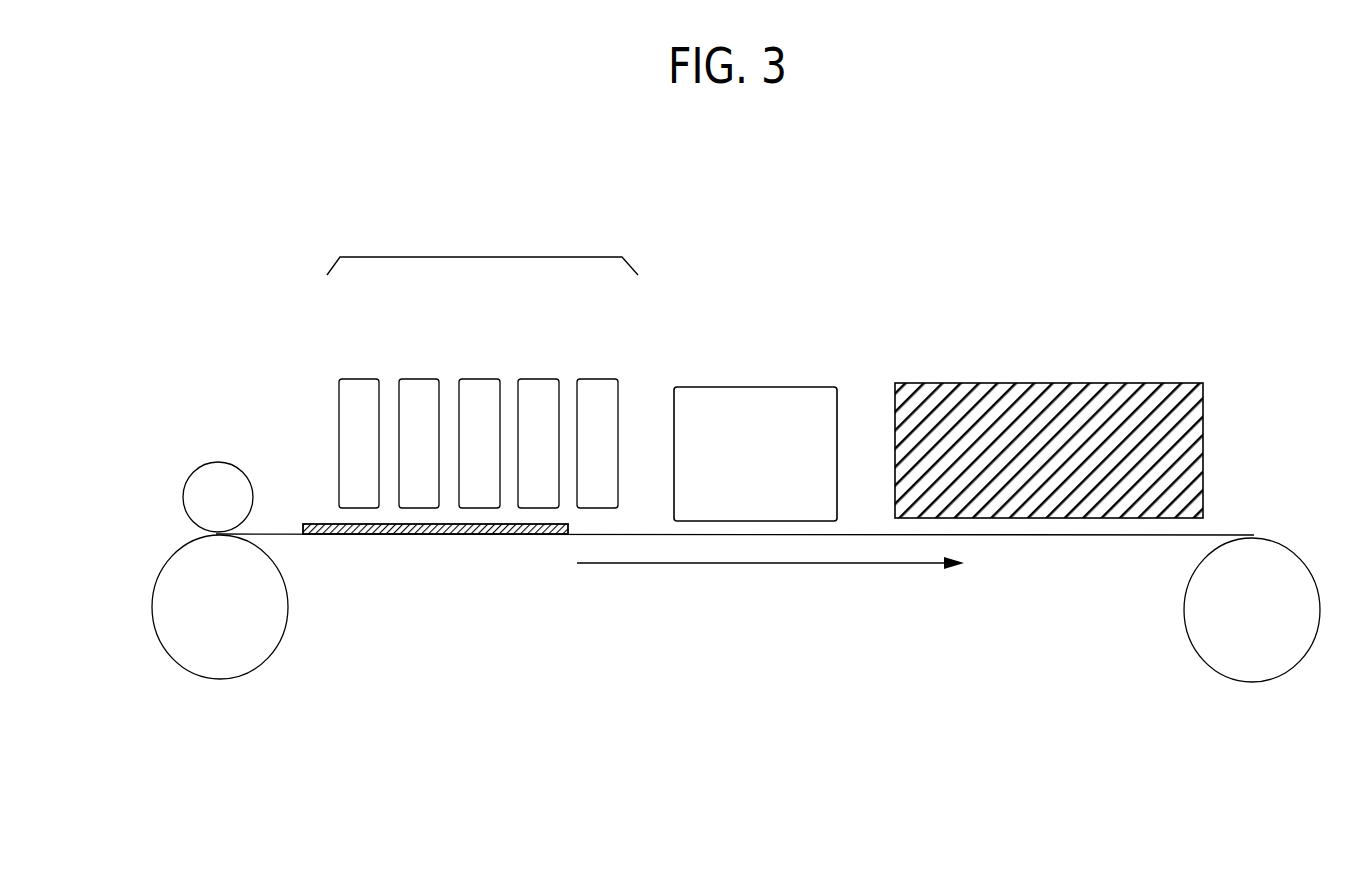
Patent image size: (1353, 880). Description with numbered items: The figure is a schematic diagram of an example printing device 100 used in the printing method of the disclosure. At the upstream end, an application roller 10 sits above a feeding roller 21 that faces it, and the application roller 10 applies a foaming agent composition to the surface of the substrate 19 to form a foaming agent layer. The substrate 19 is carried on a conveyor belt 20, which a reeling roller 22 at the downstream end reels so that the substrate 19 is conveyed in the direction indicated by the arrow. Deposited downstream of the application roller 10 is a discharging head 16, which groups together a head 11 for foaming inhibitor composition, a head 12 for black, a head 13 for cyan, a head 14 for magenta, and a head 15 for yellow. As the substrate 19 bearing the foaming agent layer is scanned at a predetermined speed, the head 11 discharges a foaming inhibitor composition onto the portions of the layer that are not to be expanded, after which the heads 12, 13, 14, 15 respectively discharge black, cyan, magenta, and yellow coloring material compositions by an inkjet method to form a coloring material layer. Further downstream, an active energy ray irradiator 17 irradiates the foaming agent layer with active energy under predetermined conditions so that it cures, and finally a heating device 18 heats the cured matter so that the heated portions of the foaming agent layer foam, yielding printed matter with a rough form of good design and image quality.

The printing device 100 is at (925, 226).
The application roller 10 is at (221, 467).
The head for foaming inhibitor composition 11 is at (360, 386).
The head for black 12 is at (420, 386).
The head for cyan 13 is at (482, 386).
The head for magenta 14 is at (540, 386).
The head for yellow 15 is at (600, 386).
The discharging head 16 is at (482, 245).
The active energy ray irradiator 17 is at (757, 395).
The heating device 18 is at (1045, 390).
The substrate 19 is at (418, 537).
The conveyor belt 20 is at (1062, 537).
The feeding roller 21 is at (220, 679).
The reeling roller 22 is at (1250, 681).